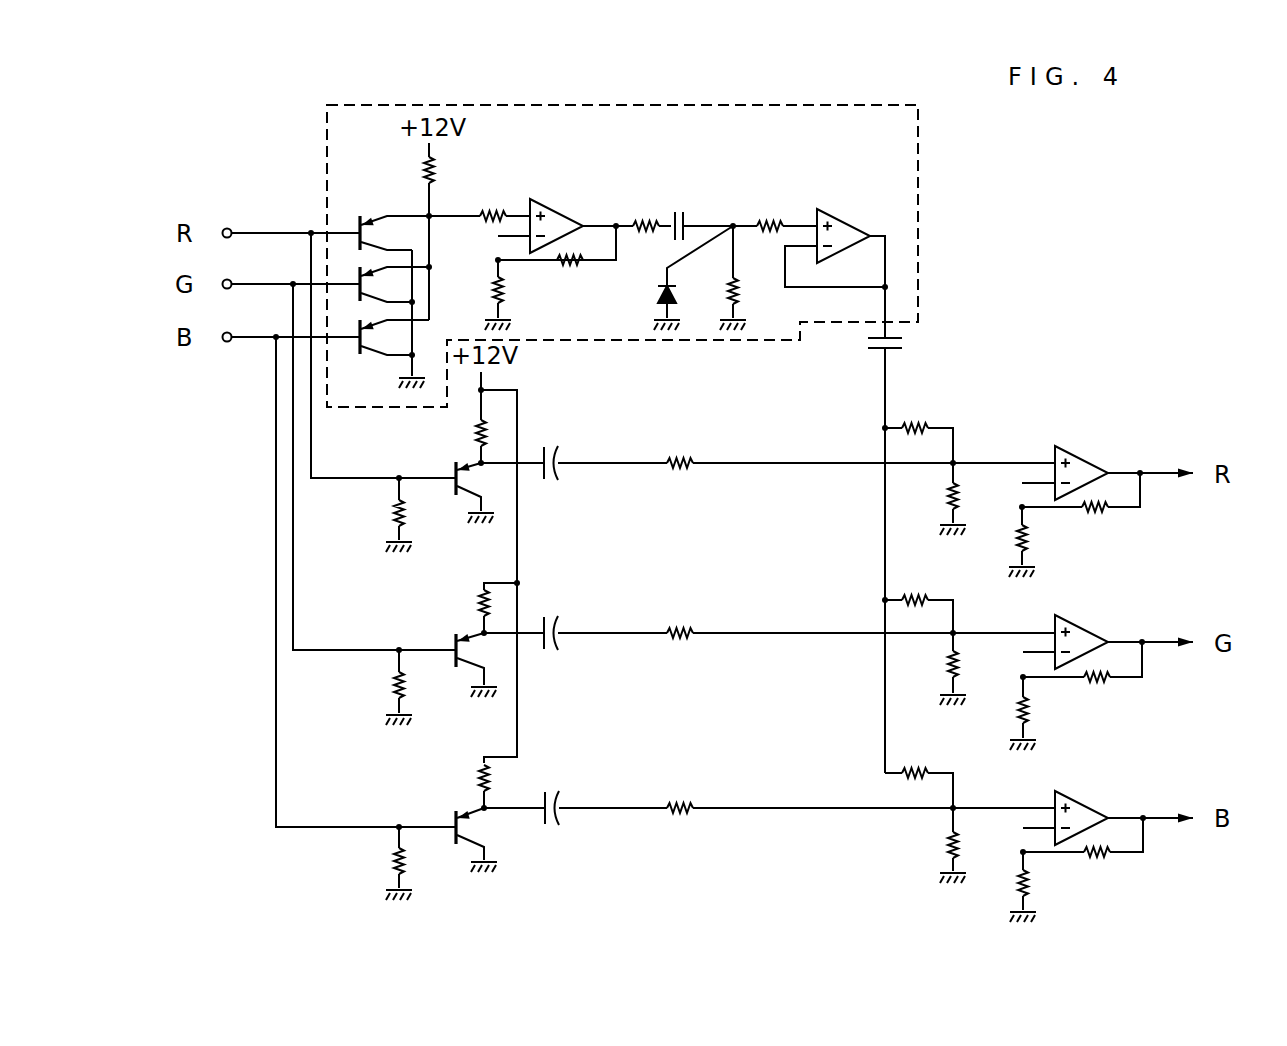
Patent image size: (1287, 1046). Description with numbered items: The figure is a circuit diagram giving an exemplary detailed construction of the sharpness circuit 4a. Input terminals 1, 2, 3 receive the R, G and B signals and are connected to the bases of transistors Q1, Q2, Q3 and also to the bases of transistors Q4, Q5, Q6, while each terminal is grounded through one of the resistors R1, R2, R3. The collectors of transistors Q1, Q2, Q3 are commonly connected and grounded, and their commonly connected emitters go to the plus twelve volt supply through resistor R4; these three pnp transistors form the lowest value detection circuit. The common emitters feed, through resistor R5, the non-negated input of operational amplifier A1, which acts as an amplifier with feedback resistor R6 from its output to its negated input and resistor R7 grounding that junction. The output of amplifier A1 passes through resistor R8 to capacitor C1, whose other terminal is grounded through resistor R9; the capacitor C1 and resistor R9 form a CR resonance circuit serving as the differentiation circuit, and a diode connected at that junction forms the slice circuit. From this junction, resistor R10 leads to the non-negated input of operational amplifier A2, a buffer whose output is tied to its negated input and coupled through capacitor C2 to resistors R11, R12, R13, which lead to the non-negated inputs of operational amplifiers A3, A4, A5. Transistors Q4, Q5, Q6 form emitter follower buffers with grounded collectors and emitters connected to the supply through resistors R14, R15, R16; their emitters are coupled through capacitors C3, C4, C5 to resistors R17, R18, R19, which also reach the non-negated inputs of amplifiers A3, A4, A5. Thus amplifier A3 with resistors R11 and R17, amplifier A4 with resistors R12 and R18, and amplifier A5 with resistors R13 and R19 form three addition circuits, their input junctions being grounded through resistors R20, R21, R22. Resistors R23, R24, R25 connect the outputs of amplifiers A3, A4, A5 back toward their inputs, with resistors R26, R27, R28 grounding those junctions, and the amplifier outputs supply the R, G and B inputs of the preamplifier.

The sharpness circuit 4a is at (232, 102).
The input terminal 1 is at (231, 230).
The input terminal 2 is at (231, 281).
The input terminal 3 is at (231, 334).
The transistor Q1 is at (378, 227).
The transistor Q2 is at (378, 280).
The transistor Q3 is at (378, 332).
The transistor Q4 is at (456, 486).
The transistor Q5 is at (457, 658).
The transistor Q6 is at (455, 834).
The operational amplifier A1 is at (581, 215).
The operational amplifier A2 is at (836, 262).
The operational amplifier A3 is at (1124, 462).
The operational amplifier A4 is at (1124, 632).
The operational amplifier A5 is at (1124, 811).
The capacitor C1 is at (700, 208).
The capacitor C2 is at (902, 553).
The capacitor C3 is at (574, 447).
The capacitor C4 is at (575, 617).
The capacitor C5 is at (575, 791).
The resistor R1 is at (377, 515).
The resistor R2 is at (377, 687).
The resistor R3 is at (377, 863).
The resistor R4 is at (407, 231).
The resistor R5 is at (479, 196).
The resistor R6 is at (557, 265).
The resistor R7 is at (491, 283).
The resistor R8 is at (648, 206).
The resistor R9 is at (720, 278).
The resistor R10 is at (775, 206).
The resistor R11 is at (917, 425).
The resistor R12 is at (917, 596).
The resistor R13 is at (919, 770).
The resistor R14 is at (456, 441).
The resistor R15 is at (458, 610).
The resistor R16 is at (458, 783).
The resistor R17 is at (859, 442).
The resistor R18 is at (859, 612).
The resistor R19 is at (859, 787).
The resistor R20 is at (931, 499).
The resistor R21 is at (931, 669).
The resistor R22 is at (931, 845).
The resistor R23 is at (1081, 512).
The resistor R24 is at (1082, 682).
The resistor R25 is at (1083, 858).
The resistor R26 is at (1010, 530).
The resistor R27 is at (1010, 701).
The resistor R28 is at (1008, 875).